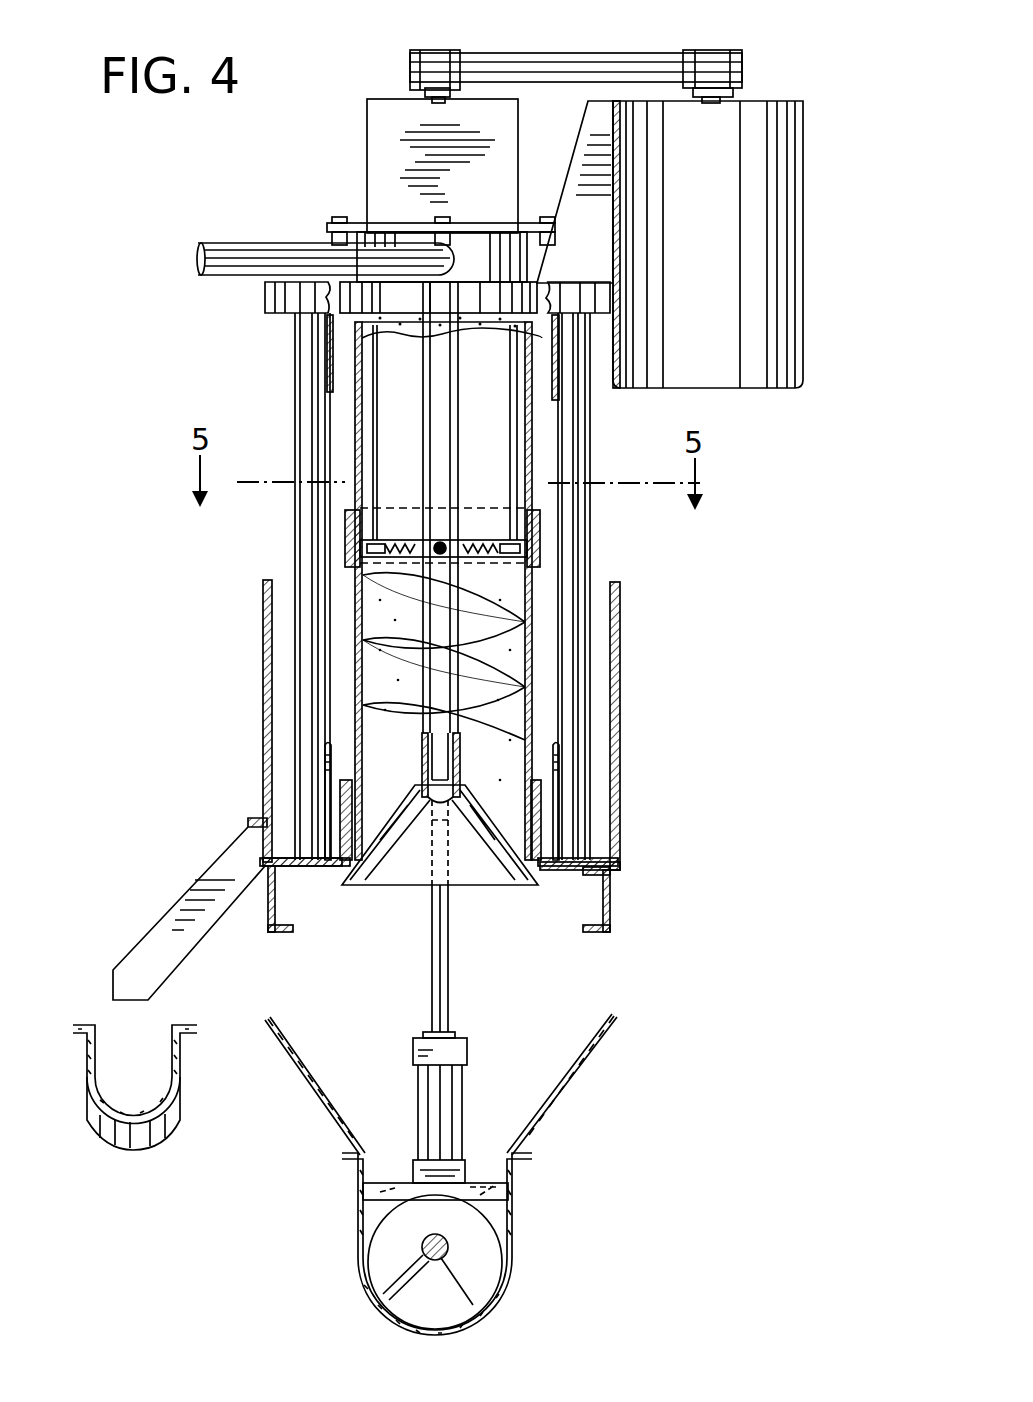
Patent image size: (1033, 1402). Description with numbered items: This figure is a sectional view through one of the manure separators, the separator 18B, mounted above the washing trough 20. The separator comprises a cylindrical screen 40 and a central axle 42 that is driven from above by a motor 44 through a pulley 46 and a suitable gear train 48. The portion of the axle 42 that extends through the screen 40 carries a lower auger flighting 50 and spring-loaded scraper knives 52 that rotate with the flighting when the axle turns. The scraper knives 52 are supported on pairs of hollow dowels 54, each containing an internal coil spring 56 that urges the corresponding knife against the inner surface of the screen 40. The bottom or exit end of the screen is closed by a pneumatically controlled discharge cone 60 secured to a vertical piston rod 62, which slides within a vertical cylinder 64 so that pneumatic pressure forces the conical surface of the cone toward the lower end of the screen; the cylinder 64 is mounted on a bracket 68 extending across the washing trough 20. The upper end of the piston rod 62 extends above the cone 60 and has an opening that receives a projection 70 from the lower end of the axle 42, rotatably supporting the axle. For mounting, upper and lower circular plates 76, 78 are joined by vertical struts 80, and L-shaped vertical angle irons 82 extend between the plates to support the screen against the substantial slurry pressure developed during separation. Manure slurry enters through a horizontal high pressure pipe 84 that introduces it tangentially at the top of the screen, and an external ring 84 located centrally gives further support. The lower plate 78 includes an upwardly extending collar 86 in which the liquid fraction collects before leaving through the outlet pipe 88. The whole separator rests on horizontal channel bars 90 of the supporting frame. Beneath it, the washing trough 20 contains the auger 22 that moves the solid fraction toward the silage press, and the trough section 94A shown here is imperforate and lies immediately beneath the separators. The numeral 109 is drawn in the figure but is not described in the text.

The separator 18B is at (247, 206).
The washing trough 20 is at (523, 1192).
The auger 22 is at (490, 1242).
The cylindrical screen 40 is at (410, 362).
The central axle 42 is at (438, 453).
The motor 44 is at (712, 224).
The pulley 46 is at (630, 78).
The gear train 48 is at (368, 150).
The lower auger flighting 50 is at (478, 632).
The scraper knives 52 is at (510, 397).
The hollow dowels 54 is at (415, 540).
The coil spring 56 is at (362, 524).
The discharge cone 60 is at (497, 875).
The vertical piston rod 62 is at (435, 925).
The vertical cylinder 64 is at (445, 1095).
The bracket 68 is at (385, 1185).
The projection 70 is at (445, 760).
The upper circular plate 76 is at (595, 302).
The lower circular plate 78 is at (570, 860).
The vertical struts 80 is at (300, 672).
The vertical angle irons 82 is at (330, 760).
The high pressure pipe 84 is at (230, 262).
The collar 86 is at (620, 690).
The pipe 88 is at (200, 900).
The horizontal channel bars 90 is at (270, 905).
The section 94A is at (365, 1276).
The wire 109 is at (473, 1305).